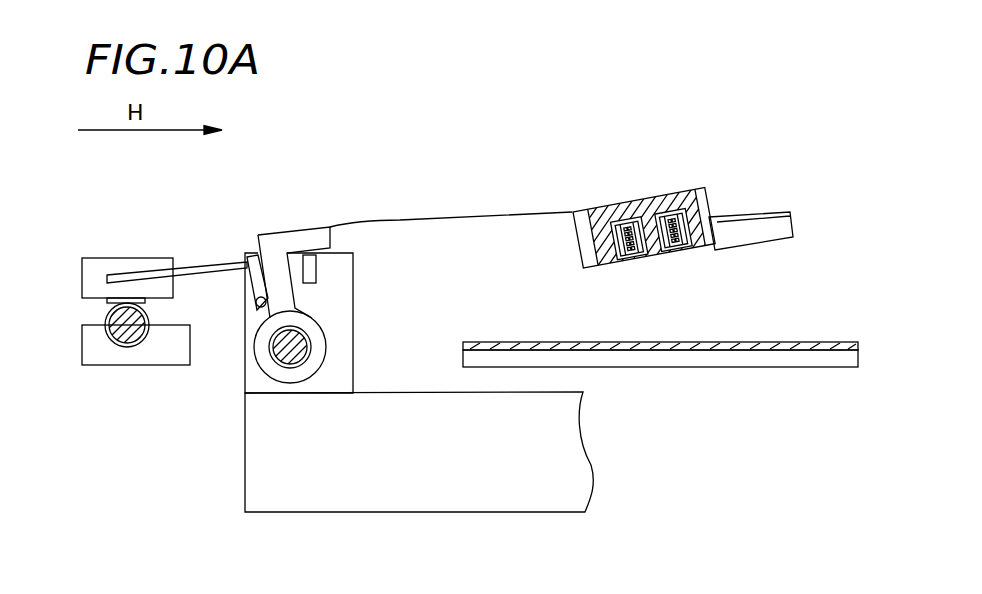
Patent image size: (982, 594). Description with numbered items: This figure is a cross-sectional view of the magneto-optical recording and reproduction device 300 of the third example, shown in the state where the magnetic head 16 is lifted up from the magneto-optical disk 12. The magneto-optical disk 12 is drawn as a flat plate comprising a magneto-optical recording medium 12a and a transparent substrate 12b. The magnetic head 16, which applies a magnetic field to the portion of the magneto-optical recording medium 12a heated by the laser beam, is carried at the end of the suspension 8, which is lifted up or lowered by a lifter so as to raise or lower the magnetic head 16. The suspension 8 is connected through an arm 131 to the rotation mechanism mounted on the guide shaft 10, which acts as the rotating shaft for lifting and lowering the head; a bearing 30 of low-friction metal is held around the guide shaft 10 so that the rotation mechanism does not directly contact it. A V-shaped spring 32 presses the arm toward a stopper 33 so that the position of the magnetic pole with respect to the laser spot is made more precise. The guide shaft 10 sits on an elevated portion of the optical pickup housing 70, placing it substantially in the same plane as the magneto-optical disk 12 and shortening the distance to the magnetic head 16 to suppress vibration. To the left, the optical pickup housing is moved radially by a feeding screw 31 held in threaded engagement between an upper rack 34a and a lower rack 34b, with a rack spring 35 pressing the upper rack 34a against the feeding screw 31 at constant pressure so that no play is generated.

The magneto-optical recording and reproduction device 300 is at (417, 139).
The suspension 8 is at (483, 217).
The magnetic head 16 is at (661, 185).
The roller arm 131 is at (283, 298).
The stopper 33 is at (310, 262).
The V-shaped spring 32 is at (253, 307).
The bearing 30 is at (302, 328).
The guide shaft 10 is at (308, 347).
The rack spring 35 is at (200, 270).
The upper rack 34a is at (97, 265).
The lower rack 34b is at (157, 353).
The feeding screw 31 is at (122, 342).
The magneto-optical disk 12 is at (712, 348).
The magneto-optical recording medium 12a is at (858, 343).
The transparent substrate 12b is at (858, 358).
The optical pickup housing 70 is at (292, 497).